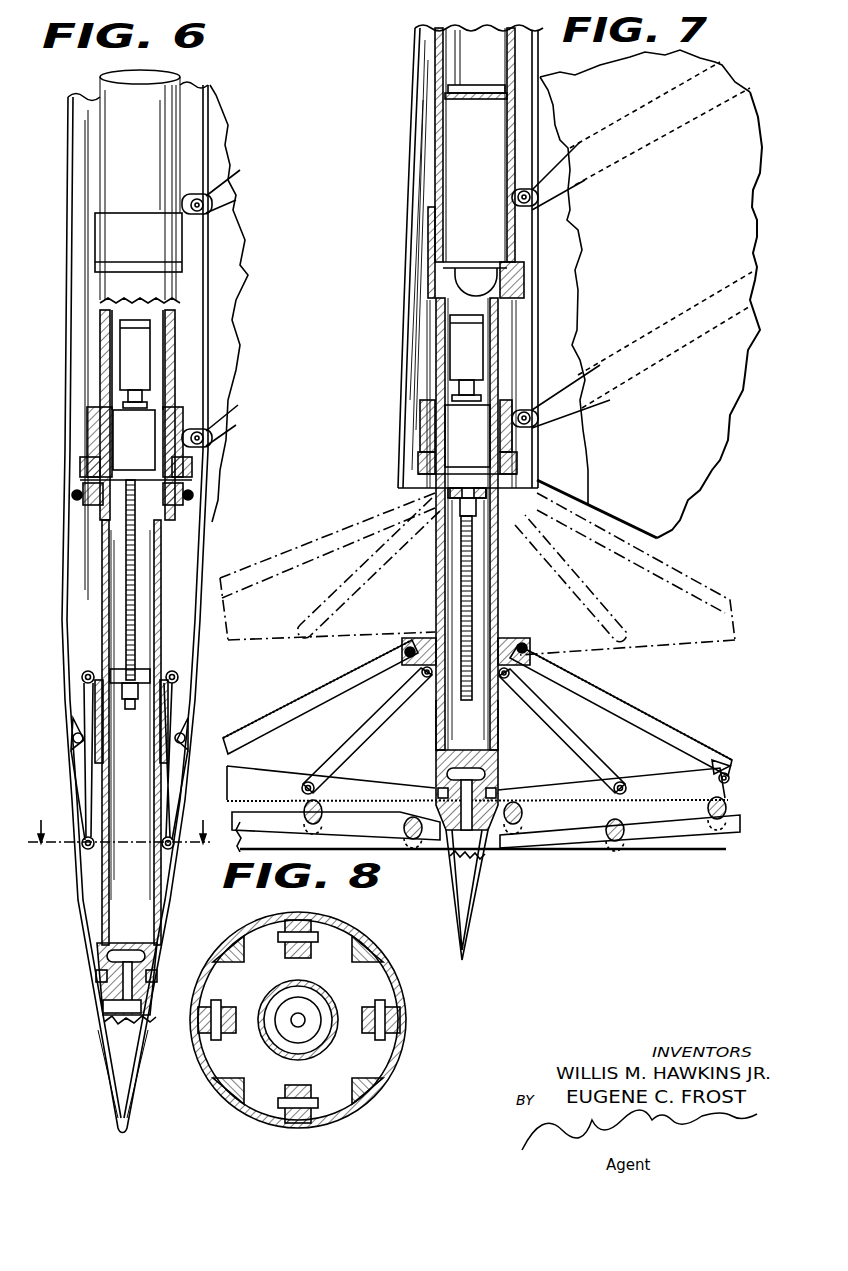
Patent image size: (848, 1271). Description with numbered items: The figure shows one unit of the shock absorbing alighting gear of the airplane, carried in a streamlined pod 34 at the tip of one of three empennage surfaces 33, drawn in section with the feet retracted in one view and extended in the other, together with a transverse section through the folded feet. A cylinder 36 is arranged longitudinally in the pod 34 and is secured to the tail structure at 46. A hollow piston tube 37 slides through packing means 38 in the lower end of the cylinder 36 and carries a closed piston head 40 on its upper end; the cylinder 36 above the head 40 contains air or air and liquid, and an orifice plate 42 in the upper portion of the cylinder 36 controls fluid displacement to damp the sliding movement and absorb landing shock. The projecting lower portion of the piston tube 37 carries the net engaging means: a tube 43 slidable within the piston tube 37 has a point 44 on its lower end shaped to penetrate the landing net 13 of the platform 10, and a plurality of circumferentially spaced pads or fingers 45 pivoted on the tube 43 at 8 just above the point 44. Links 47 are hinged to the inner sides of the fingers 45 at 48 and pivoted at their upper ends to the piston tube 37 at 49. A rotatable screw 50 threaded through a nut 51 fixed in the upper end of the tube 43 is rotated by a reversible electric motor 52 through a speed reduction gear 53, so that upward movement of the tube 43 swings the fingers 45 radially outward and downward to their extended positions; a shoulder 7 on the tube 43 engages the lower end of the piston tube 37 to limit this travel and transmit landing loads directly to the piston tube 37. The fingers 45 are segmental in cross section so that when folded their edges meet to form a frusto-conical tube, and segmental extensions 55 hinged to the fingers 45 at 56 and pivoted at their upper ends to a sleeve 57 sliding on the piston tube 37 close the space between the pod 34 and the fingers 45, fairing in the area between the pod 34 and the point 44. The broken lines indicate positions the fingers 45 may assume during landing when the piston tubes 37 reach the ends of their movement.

In FIG. 6, the shoulder 7 is at (157, 950).
In FIG. 7, the shoulder 7 is at (432, 752).
In FIG. 6, the finger pivot 8 is at (50, 990).
In FIG. 7, the finger pivot 8 is at (498, 788).
In FIG. 7, the platform 10 is at (704, 851).
In FIG. 7, the net 13 is at (596, 840).
In FIG. 6, the empennage surface 33 is at (246, 280).
In FIG. 7, the empennage surface 33 is at (694, 238).
In FIG. 6, the streamlined pod 34 is at (66, 278).
In FIG. 7, the streamlined pod 34 is at (406, 266).
In FIG. 6, the cylinder 36 is at (100, 354).
In FIG. 7, the cylinder 36 is at (436, 148).
In FIG. 6, the piston tube 37 is at (175, 344).
In FIG. 7, the piston tube 37 is at (432, 352).
In FIG. 6, the packing means 38 is at (86, 476).
In FIG. 7, the packing means 38 is at (422, 464).
In FIG. 7, the piston head 40 is at (438, 286).
In FIG. 7, the orifice plate 42 is at (450, 98).
In FIG. 6, the tube 43 is at (104, 924).
In FIG. 7, the tube 43 is at (495, 716).
In FIG. 8, the tube 43 is at (322, 1048).
In FIG. 6, the point 44 is at (116, 1118).
In FIG. 7, the point 44 is at (484, 920).
In FIG. 6, the pads or fingers 45 is at (76, 882).
In FIG. 7, the pads or fingers 45 is at (396, 838).
In FIG. 8, the pads or fingers 45 is at (336, 914).
In FIG. 6, the cylinder attachment 46 is at (203, 206).
In FIG. 7, the cylinder attachment 46 is at (531, 200).
In FIG. 6, the links 47 is at (173, 698).
In FIG. 7, the links 47 is at (380, 720).
In FIG. 6, the link-to-finger hinge 48 is at (86, 846).
In FIG. 7, the link-to-finger hinge 48 is at (308, 782).
In FIG. 6, the link-to-piston-tube pivot 49 is at (82, 678).
In FIG. 7, the link-to-piston-tube pivot 49 is at (422, 676).
In FIG. 6, the rotatable screw 50 is at (126, 572).
In FIG. 7, the rotatable screw 50 is at (473, 562).
In FIG. 6, the nut 51 is at (143, 670).
In FIG. 7, the nut 51 is at (460, 506).
In FIG. 6, the reversible electric motor 52 is at (146, 370).
In FIG. 7, the reversible electric motor 52 is at (479, 358).
In FIG. 6, the speed reduction gear 53 is at (116, 432).
In FIG. 7, the speed reduction gear 53 is at (456, 424).
In FIG. 6, the extensions 55 is at (62, 620).
In FIG. 7, the extensions 55 is at (352, 668).
In FIG. 6, the extension-to-finger hinge 56 is at (70, 740).
In FIG. 7, the extension-to-finger hinge 56 is at (727, 780).
In FIG. 8, the extension-to-finger hinge 56 is at (401, 1012).
In FIG. 6, the sleeve 57 is at (82, 506).
In FIG. 7, the sleeve 57 is at (426, 638).